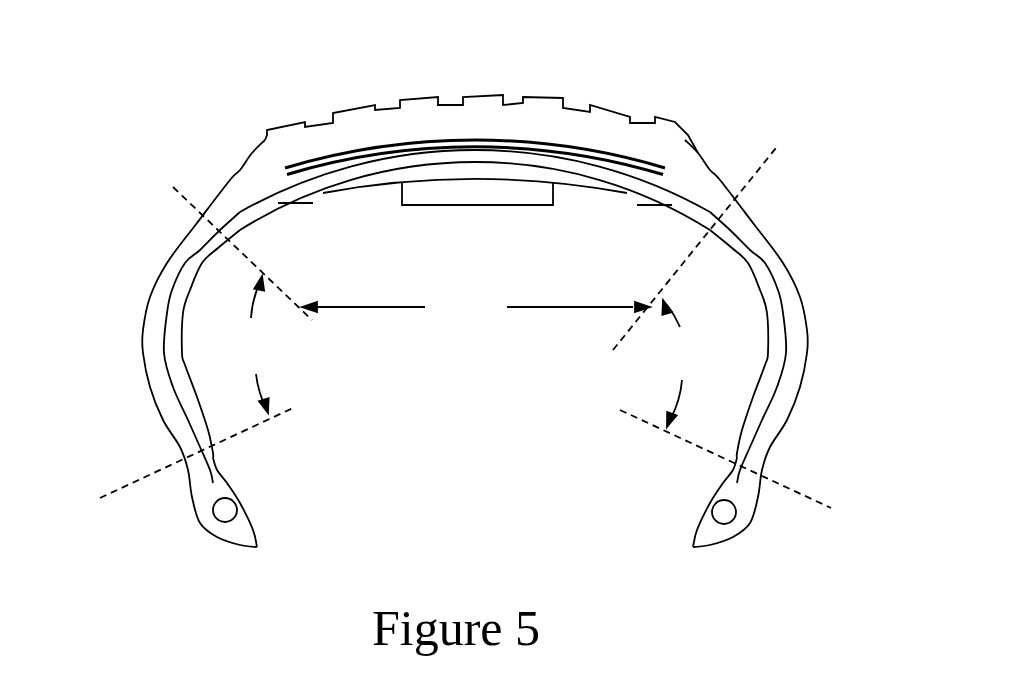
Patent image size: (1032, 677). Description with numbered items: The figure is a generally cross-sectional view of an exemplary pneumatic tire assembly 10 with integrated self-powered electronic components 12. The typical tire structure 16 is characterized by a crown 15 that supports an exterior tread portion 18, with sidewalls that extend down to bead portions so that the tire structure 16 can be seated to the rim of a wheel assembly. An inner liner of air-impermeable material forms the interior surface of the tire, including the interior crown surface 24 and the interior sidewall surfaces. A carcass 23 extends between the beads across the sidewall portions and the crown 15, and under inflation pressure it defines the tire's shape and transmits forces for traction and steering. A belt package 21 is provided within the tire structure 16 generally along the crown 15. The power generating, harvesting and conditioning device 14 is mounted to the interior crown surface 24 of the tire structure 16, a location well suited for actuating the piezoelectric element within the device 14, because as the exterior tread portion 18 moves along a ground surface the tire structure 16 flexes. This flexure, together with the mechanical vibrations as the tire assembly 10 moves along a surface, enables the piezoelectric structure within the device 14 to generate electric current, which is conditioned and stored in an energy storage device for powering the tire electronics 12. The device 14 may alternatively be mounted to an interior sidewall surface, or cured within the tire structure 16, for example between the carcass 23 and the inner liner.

The pneumatic tire assembly 10 is at (708, 130).
The self-powered electronic components 12 is at (458, 204).
The power generating, harvesting and conditioning device 14 is at (323, 193).
The crown 15 is at (476, 310).
The tire structure 16 is at (803, 328).
The exterior tread portion 18 is at (412, 99).
The belt package 21 is at (455, 141).
The carcass 23 is at (160, 327).
The interior crown surface 24 is at (612, 182).